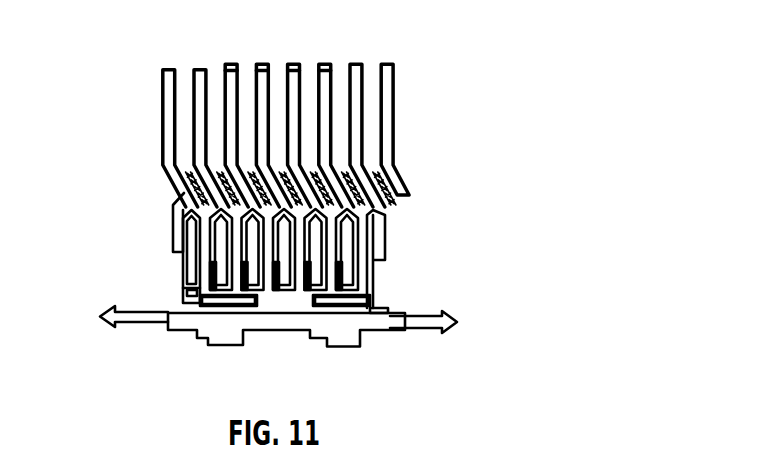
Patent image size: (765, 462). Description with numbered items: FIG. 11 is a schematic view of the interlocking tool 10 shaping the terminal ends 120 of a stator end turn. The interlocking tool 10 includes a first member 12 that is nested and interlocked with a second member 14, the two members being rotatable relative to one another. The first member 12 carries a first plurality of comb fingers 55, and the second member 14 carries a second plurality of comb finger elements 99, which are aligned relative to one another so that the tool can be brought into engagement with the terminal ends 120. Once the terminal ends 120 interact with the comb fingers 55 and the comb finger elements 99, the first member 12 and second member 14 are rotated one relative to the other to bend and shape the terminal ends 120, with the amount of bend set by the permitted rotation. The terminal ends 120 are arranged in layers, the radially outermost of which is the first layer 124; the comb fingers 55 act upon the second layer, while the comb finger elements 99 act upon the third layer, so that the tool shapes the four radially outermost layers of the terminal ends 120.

The interlocking tool 10 is at (291, 290).
The first member 12 is at (283, 328).
The second member 14 is at (165, 275).
The first plurality of comb fingers 55 is at (350, 237).
The second plurality of comb finger elements 99 is at (188, 230).
The terminal ends 120 is at (133, 110).
The first layer 124 is at (145, 45).